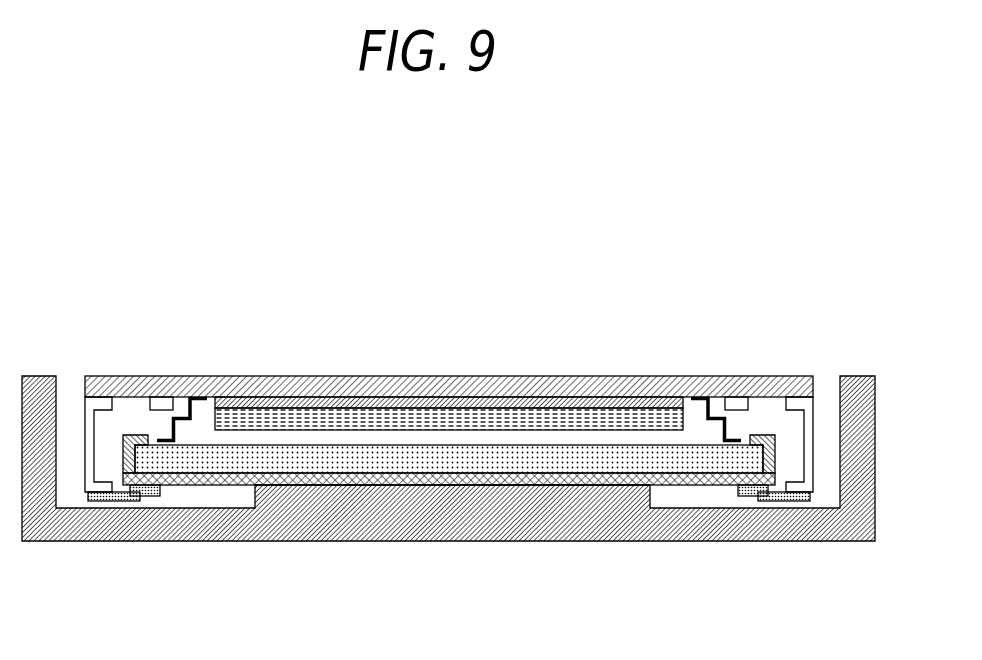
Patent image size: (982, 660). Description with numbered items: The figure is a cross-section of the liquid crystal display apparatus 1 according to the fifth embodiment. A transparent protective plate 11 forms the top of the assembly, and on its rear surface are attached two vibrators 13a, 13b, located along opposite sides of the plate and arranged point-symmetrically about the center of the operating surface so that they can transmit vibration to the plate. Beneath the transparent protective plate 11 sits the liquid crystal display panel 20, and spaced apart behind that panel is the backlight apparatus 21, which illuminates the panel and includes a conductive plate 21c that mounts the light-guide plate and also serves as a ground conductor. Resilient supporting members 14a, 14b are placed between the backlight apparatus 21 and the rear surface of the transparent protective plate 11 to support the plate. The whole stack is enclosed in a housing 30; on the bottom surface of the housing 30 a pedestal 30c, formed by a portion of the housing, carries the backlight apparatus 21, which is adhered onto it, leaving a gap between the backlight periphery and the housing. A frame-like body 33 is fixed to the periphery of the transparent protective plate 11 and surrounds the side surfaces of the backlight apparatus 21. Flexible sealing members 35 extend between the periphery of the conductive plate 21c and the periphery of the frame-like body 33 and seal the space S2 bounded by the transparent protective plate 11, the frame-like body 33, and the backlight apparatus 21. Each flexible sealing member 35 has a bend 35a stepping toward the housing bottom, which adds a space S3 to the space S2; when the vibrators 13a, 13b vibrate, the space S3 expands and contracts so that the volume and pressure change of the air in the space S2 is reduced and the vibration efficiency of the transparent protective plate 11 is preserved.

The liquid crystal display apparatus 1 is at (667, 280).
The transparent protective plate 11 is at (243, 376).
The vibrator 13a is at (155, 403).
The vibrator 13b is at (752, 402).
The resilient supporting member 14a is at (190, 400).
The resilient supporting member 14b is at (715, 400).
The liquid crystal display panel 20 is at (305, 415).
The backlight apparatus 21 is at (335, 470).
The conductive plate 21c is at (232, 485).
The housing 30 is at (590, 542).
The pedestal 30c is at (550, 502).
The frame-like body 33 is at (83, 423).
The flexible sealing member 35 is at (143, 497).
The bend 35a is at (105, 495).
The space S2 is at (125, 412).
The space S3 is at (122, 490).